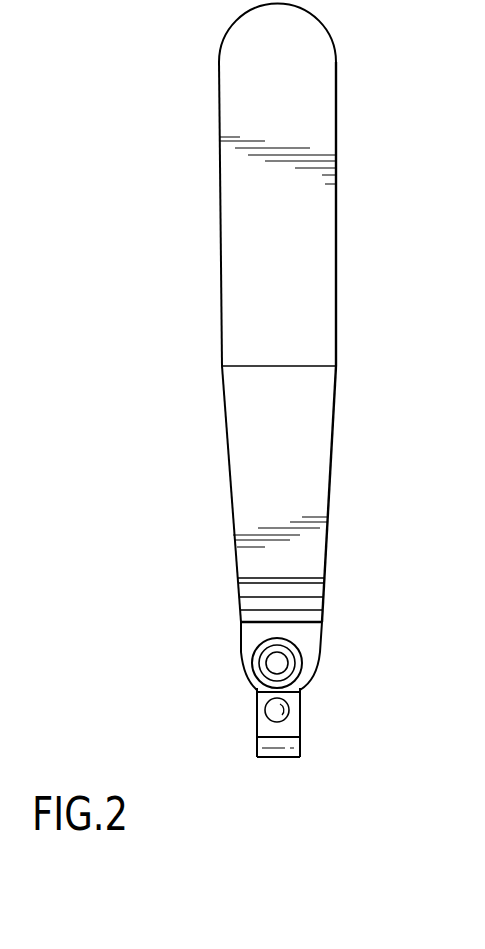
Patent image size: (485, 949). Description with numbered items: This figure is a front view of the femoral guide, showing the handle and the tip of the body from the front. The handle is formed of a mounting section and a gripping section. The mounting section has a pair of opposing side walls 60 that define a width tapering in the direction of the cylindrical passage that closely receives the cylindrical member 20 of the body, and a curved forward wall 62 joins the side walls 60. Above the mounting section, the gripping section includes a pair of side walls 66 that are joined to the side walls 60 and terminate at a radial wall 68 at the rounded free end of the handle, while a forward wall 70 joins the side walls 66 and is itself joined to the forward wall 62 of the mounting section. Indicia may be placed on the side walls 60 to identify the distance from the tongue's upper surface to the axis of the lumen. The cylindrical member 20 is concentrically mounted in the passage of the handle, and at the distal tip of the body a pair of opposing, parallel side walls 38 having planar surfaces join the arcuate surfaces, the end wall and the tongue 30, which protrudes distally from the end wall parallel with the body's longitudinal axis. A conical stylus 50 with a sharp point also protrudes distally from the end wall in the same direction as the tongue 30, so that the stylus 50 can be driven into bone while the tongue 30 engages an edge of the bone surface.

The radial wall 68 is at (268, 60).
The side walls 66 is at (220, 233).
The forward wall 70 is at (285, 223).
The forward wall 62 is at (292, 432).
The side walls 60 is at (228, 503).
The cylindrical member 20 is at (300, 647).
The stylus 50 is at (295, 708).
The side walls 38 is at (257, 728).
The tongue 30 is at (257, 752).